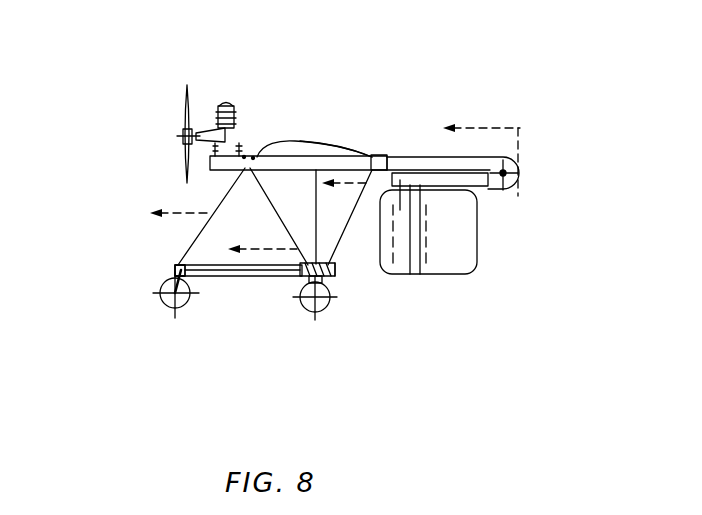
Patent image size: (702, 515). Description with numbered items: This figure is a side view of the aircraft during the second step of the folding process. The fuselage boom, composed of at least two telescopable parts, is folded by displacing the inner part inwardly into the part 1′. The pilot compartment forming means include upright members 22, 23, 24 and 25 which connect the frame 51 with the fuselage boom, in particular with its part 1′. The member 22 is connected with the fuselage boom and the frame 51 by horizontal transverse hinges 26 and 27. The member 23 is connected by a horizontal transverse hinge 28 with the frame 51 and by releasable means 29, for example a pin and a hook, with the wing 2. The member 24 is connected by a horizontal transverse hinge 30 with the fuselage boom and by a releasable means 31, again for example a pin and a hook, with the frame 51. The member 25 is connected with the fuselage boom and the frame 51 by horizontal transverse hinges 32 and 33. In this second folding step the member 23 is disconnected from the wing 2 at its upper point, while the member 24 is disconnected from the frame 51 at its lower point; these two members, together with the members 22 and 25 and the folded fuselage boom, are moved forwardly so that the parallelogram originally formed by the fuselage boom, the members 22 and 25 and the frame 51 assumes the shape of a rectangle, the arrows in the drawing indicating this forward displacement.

The upright member 25 is at (213, 193).
The telescopable part of fuselage boom 1′ is at (210, 130).
The horizontal transverse hinge 32 is at (244, 156).
The horizontal transverse hinge 30 is at (253, 157).
The wing 2 is at (293, 143).
The releasable means 29 is at (329, 149).
The horizontal transverse hinge 27 is at (395, 161).
The horizontal transverse hinge 33 is at (178, 265).
The frame 51 is at (223, 268).
The upright member 24 is at (292, 237).
The releasable means 31 is at (306, 277).
The horizontal transverse hinge 28 is at (313, 283).
The horizontal transverse hinge 26 is at (335, 273).
The upright member 23 is at (316, 232).
The upright member 22 is at (340, 240).